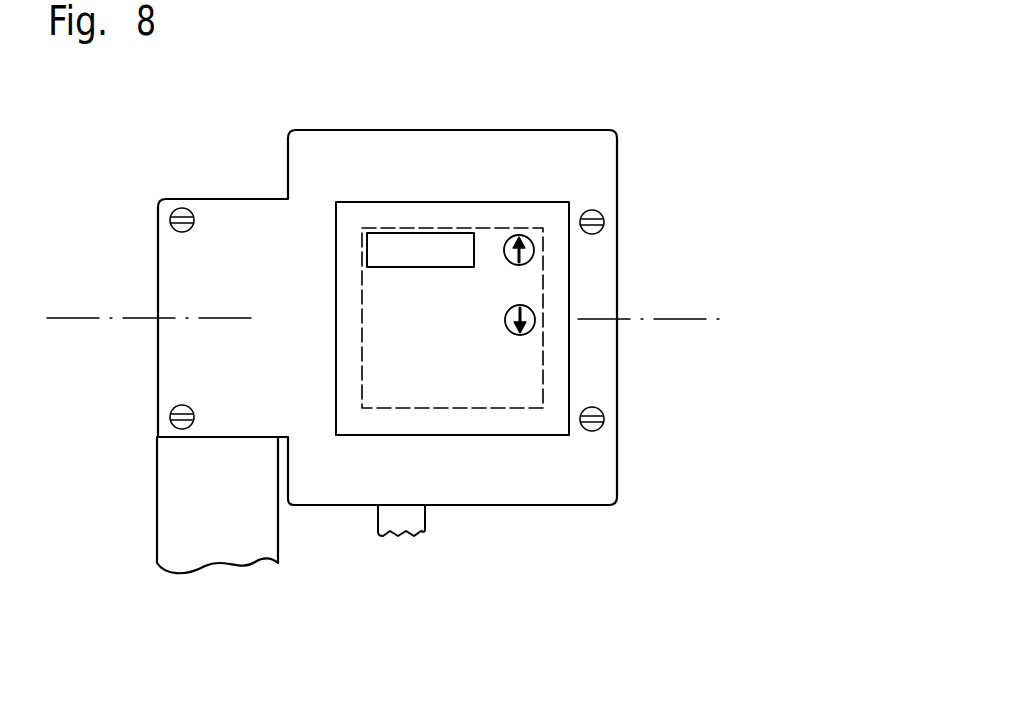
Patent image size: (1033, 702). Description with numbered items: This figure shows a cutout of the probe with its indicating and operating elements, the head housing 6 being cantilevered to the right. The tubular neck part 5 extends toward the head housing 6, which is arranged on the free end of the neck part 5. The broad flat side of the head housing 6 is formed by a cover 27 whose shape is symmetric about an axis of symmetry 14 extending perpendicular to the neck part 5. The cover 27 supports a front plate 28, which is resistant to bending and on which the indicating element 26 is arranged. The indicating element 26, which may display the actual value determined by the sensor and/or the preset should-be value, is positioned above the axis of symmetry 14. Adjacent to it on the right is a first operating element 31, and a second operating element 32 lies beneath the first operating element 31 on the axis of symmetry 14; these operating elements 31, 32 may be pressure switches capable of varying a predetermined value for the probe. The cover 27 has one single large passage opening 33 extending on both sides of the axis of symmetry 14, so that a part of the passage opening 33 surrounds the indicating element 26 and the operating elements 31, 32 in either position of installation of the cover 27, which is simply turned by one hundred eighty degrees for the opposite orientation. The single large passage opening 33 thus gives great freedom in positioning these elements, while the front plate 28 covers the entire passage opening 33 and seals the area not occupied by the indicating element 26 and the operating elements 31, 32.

The neck part 5 is at (240, 533).
The head housing 6 is at (617, 165).
The axis of symmetry 14 is at (683, 322).
The indicating element 26 is at (387, 240).
The cover 27 is at (550, 483).
The front plate 28 is at (345, 427).
The first operating element 31 is at (535, 247).
The second operating element 32 is at (535, 318).
The passage opening 33 is at (495, 228).